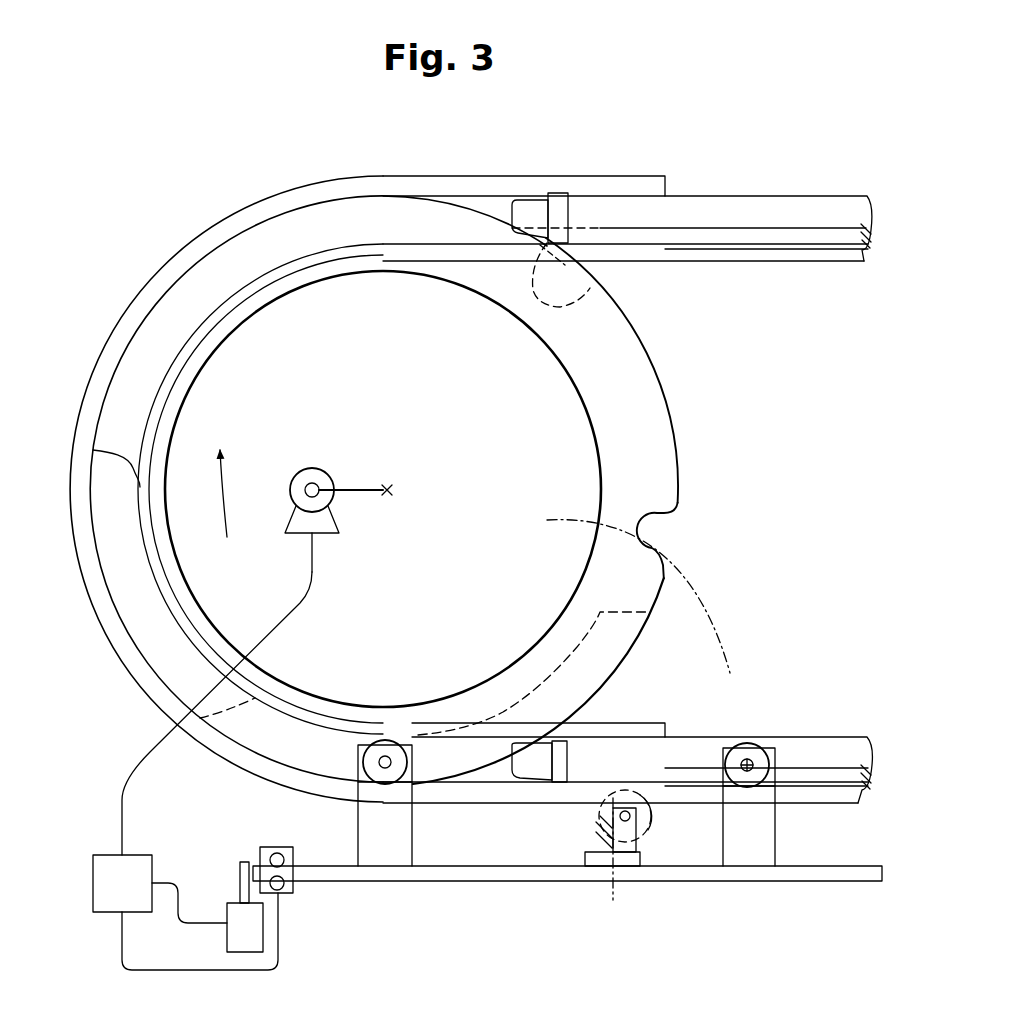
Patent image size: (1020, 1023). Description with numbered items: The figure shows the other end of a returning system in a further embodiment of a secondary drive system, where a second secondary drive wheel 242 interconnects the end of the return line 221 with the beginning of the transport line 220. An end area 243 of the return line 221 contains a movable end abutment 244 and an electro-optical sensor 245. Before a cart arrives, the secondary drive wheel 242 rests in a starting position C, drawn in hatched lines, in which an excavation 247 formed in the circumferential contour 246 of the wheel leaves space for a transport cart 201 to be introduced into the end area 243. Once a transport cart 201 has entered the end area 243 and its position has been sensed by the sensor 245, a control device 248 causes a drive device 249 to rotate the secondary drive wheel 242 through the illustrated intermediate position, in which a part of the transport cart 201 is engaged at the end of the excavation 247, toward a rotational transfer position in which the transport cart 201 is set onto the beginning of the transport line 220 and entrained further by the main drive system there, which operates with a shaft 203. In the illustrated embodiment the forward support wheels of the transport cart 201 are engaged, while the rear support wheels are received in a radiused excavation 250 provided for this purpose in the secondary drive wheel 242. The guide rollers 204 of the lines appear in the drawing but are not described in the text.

The transport cart 201 is at (480, 882).
The shaft 203 is at (752, 207).
The guide roller 204 is at (388, 752).
The transport line 220 is at (781, 268).
The return line 221 is at (838, 734).
The second secondary drive wheel 242 is at (217, 381).
The end area 243 is at (518, 814).
The movable end abutment 244 is at (240, 877).
The electro-optical sensor 245 is at (294, 893).
The circumferential contour 246 is at (677, 428).
The excavation 247 is at (148, 575).
The control device 248 is at (93, 886).
The drive device 249 is at (312, 468).
The radiused excavation 250 is at (660, 514).
The starting position C is at (510, 688).